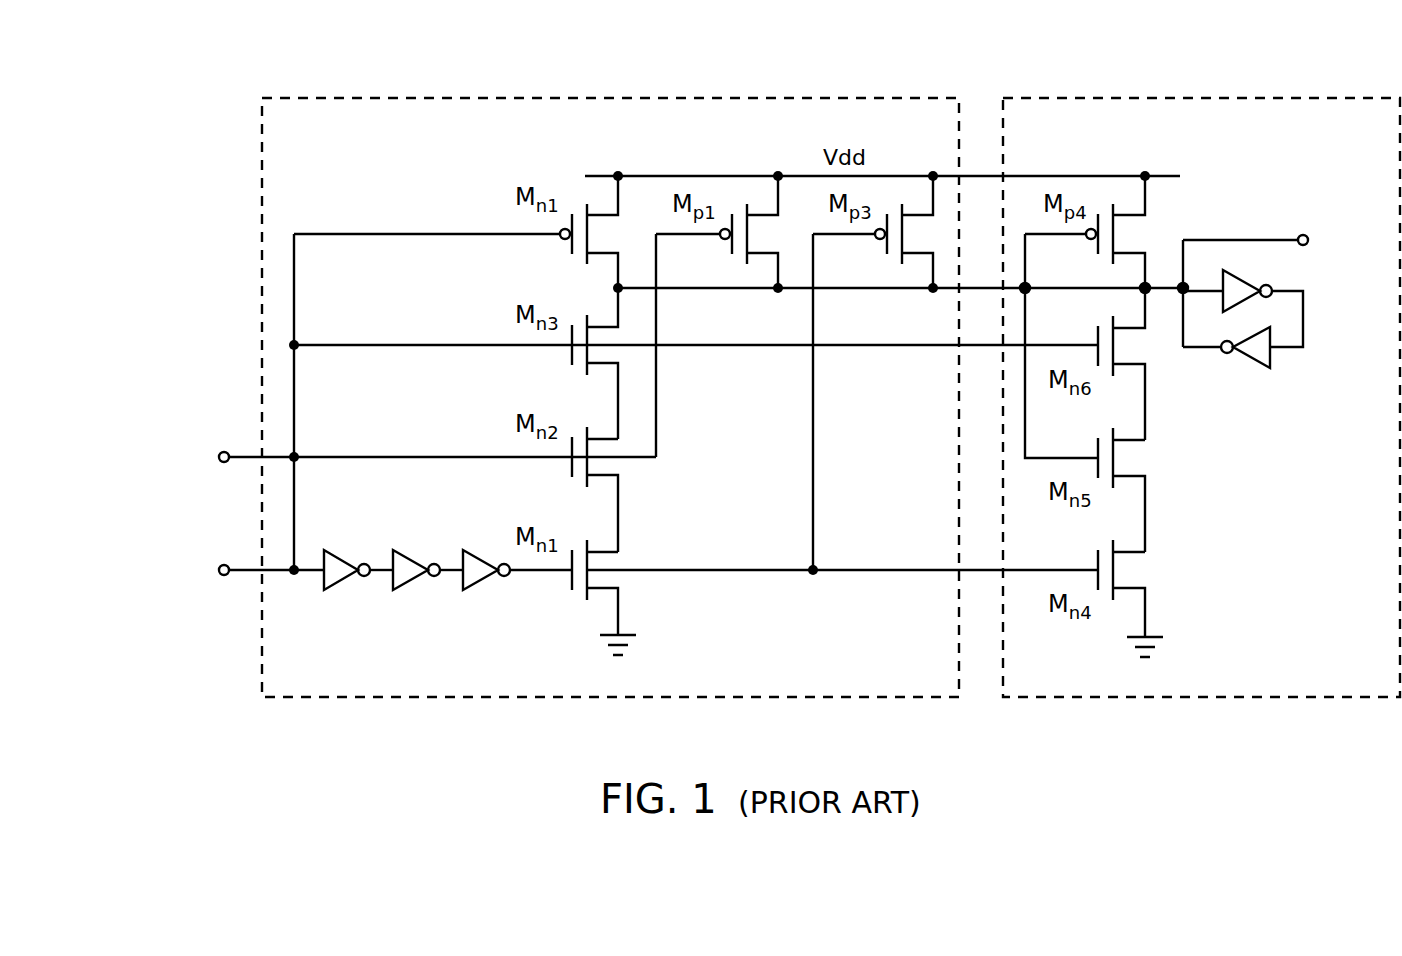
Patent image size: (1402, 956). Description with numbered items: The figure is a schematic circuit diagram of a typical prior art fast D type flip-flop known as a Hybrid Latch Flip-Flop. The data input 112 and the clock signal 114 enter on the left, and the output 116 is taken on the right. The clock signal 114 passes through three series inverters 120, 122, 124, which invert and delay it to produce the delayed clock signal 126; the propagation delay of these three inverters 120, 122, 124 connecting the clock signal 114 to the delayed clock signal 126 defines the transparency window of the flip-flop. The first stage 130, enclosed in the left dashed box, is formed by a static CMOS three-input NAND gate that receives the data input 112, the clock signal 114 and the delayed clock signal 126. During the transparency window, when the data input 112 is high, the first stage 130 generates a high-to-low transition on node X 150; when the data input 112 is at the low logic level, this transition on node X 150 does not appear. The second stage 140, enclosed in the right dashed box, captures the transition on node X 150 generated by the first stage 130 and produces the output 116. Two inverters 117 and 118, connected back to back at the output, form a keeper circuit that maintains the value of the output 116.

The data input D 112 is at (197, 440).
The clock signal CLK0 114 is at (176, 550).
The output Q 116 is at (1306, 234).
The inverter 117 is at (1241, 276).
The inverter 118 is at (1256, 370).
The inverter 120 is at (343, 548).
The inverter 122 is at (412, 548).
The inverter 124 is at (482, 548).
The clock signal CLK3 126 is at (700, 533).
The first stage 130 is at (481, 97).
The second stage 140 is at (1245, 97).
The node X 150 is at (1062, 291).